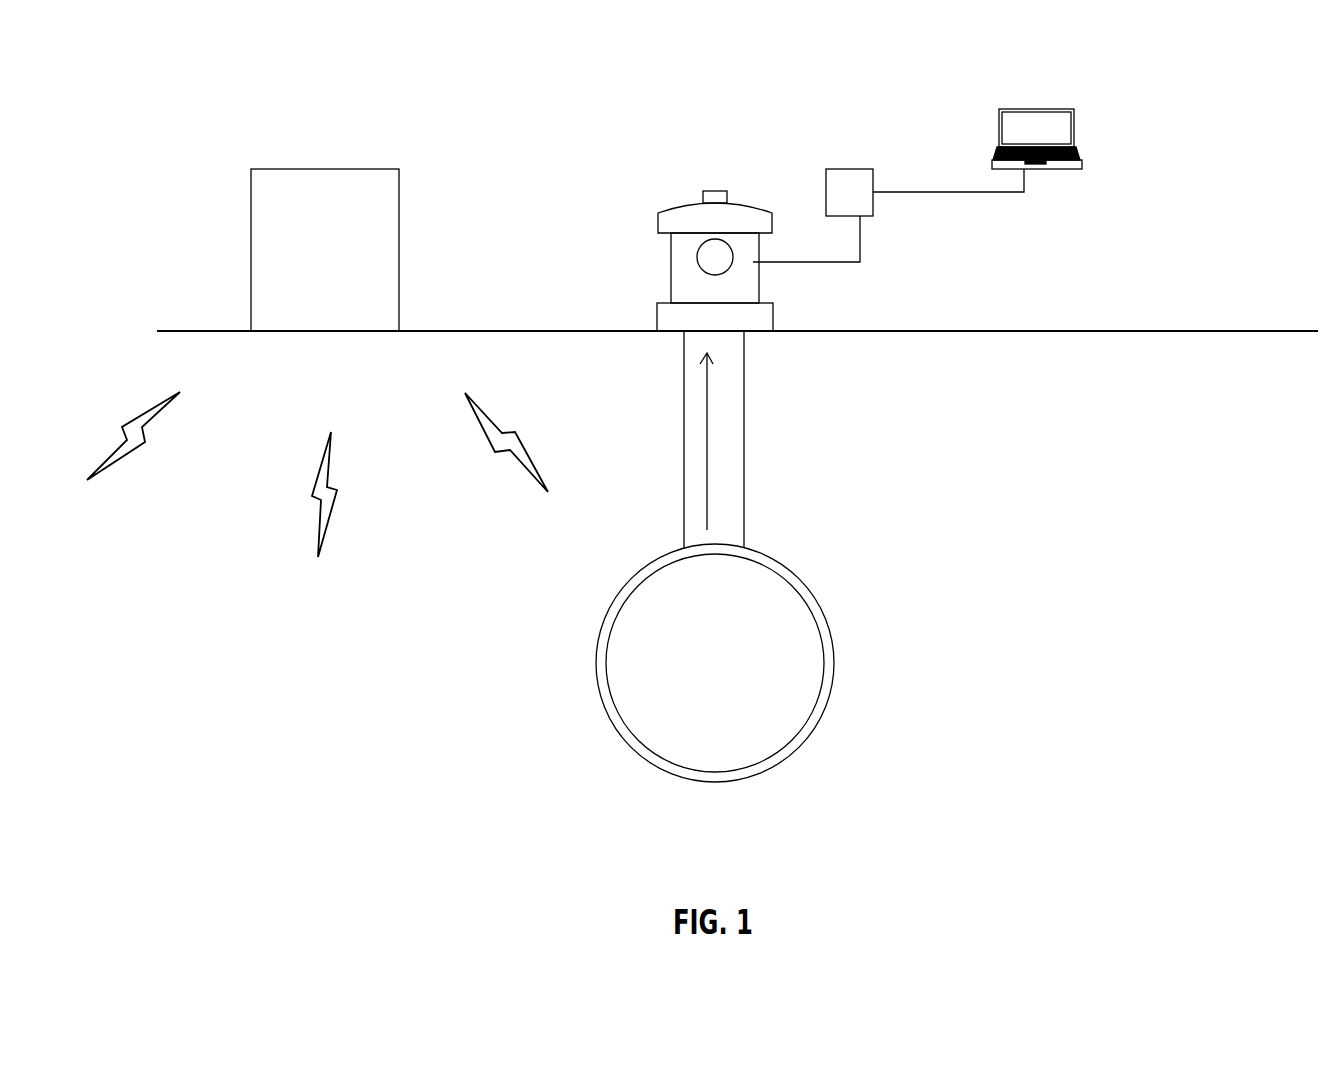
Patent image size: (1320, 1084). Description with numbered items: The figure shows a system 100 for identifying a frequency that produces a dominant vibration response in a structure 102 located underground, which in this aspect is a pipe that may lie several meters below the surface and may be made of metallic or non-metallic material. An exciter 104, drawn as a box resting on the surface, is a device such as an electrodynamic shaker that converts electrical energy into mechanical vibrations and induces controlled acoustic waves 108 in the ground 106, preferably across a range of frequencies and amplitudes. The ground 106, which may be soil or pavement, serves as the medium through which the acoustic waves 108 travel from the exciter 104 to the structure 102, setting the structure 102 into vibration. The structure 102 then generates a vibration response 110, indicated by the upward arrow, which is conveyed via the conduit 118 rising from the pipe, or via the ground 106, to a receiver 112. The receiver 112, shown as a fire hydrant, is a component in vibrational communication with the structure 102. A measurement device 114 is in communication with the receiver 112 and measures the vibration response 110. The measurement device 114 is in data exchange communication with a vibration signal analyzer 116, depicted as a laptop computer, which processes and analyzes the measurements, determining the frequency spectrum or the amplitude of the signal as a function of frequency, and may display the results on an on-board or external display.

The system 100 is at (1150, 168).
The structure 102 is at (820, 602).
The exciter 104 is at (399, 204).
The ground 106 is at (1052, 331).
The acoustic waves 108 is at (175, 397).
The vibration response 110 is at (707, 482).
The receiver 112 is at (660, 228).
The measurement device 114 is at (825, 170).
The vibration signal analyzer 116 is at (1074, 124).
The conduit 118 is at (744, 452).